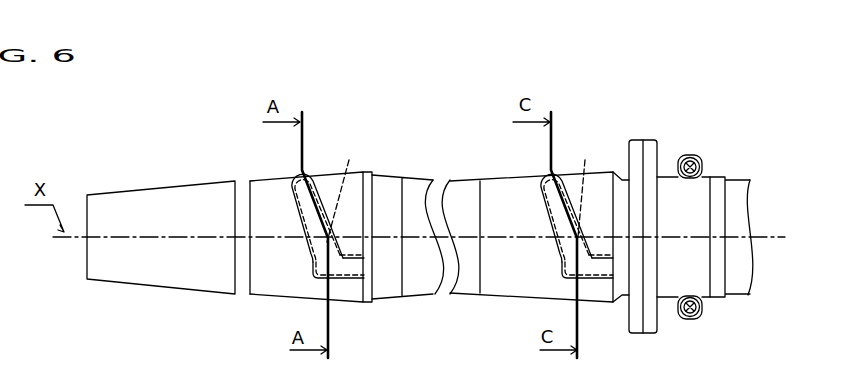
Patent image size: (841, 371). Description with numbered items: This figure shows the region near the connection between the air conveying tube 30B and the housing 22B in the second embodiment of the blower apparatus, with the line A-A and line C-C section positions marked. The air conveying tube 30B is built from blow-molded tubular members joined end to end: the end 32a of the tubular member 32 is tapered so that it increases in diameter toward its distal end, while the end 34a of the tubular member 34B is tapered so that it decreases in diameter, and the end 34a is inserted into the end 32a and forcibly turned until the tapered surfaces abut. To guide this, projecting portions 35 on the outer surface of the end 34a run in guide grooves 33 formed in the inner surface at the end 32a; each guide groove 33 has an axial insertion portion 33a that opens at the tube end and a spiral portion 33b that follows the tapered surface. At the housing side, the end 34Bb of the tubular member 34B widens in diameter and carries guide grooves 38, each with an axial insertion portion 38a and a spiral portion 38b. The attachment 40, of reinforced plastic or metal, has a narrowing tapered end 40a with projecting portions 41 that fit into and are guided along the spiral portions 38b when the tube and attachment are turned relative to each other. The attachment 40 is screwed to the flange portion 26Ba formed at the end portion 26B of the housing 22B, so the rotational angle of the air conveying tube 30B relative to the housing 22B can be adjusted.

The air conveying tube 30B is at (151, 130).
The tubular member 32 is at (128, 287).
The end of tubular member 32a is at (296, 178).
The guide groove 33 is at (232, 344).
The insertion portion 33a is at (337, 280).
The spiral portion 33b is at (305, 237).
The tubular member 34B is at (412, 179).
The end of air conveying tube 34Bb is at (530, 177).
The end of tubular member 34a is at (365, 303).
The projecting portion 35 is at (342, 189).
The guide groove 38 is at (481, 343).
The insertion portion 38a is at (585, 283).
The spiral portion 38b is at (555, 232).
The attachment 40 is at (636, 137).
The end of attachment 40a is at (615, 170).
The projecting portion 41 is at (582, 186).
The housing 22B is at (745, 140).
The housing portion 26B is at (713, 298).
The housing end portion 26Ba is at (660, 318).